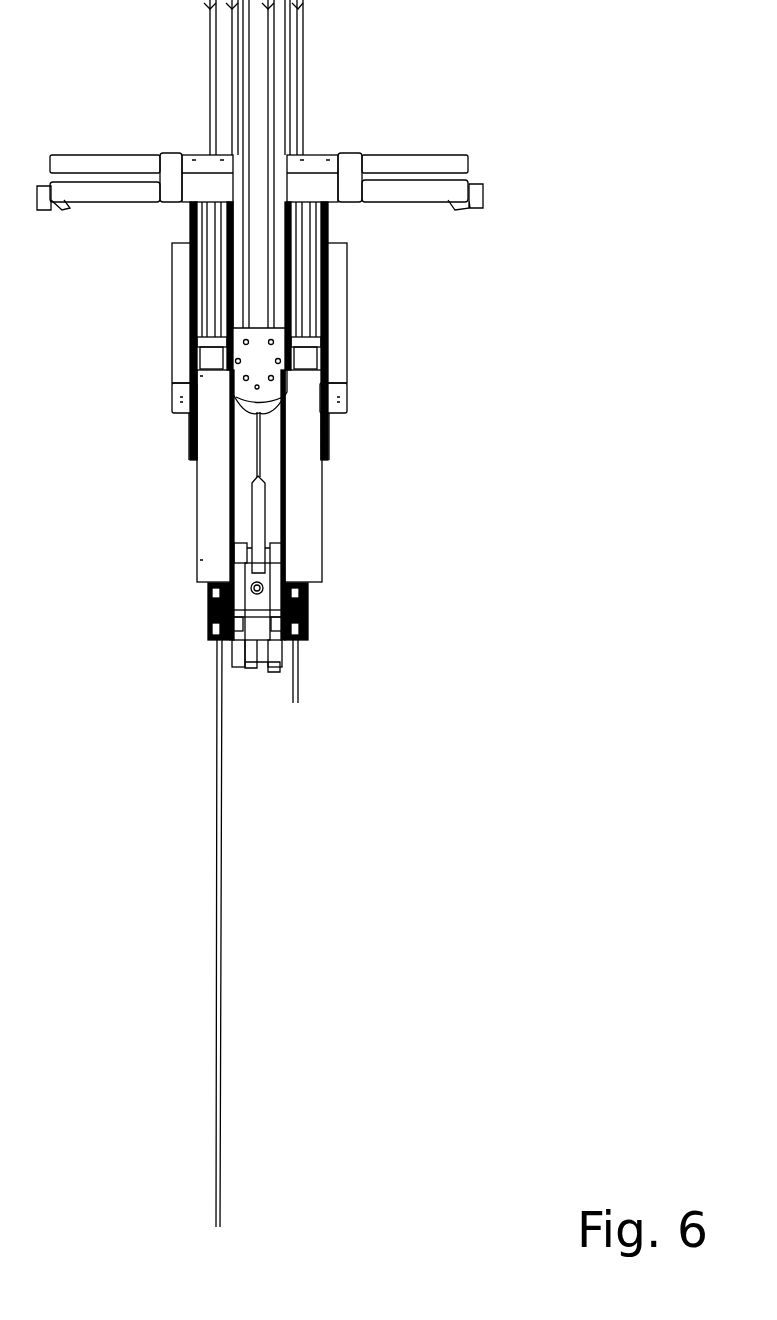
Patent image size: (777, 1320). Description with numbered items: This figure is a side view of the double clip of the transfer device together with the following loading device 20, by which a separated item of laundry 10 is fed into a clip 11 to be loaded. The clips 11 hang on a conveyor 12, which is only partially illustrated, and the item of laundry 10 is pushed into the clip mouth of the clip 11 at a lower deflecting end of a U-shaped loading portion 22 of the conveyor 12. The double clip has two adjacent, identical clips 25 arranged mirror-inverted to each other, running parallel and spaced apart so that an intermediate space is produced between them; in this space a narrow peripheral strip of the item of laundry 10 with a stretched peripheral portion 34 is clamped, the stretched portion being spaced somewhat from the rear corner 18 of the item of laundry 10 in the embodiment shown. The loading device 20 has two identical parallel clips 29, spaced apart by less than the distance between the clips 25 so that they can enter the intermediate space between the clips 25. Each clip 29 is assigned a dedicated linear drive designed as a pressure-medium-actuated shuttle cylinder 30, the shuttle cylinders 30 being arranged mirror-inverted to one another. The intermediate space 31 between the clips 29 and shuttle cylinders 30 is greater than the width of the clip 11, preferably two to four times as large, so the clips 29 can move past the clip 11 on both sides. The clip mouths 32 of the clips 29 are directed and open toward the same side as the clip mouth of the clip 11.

The item of laundry 10 is at (220, 1162).
The clip 11 is at (260, 523).
The conveyor 12 is at (263, 98).
The rear corner 18 is at (298, 693).
The loading device 20 is at (393, 344).
The U-shaped loading portion 22 is at (262, 358).
The clip 25 is at (223, 635).
The clip 29 is at (238, 653).
The shuttle cylinder 30 is at (213, 508).
The intermediate space 31 is at (262, 635).
The clip mouth 32 is at (267, 657).
The stretched peripheral portion 34 is at (253, 662).